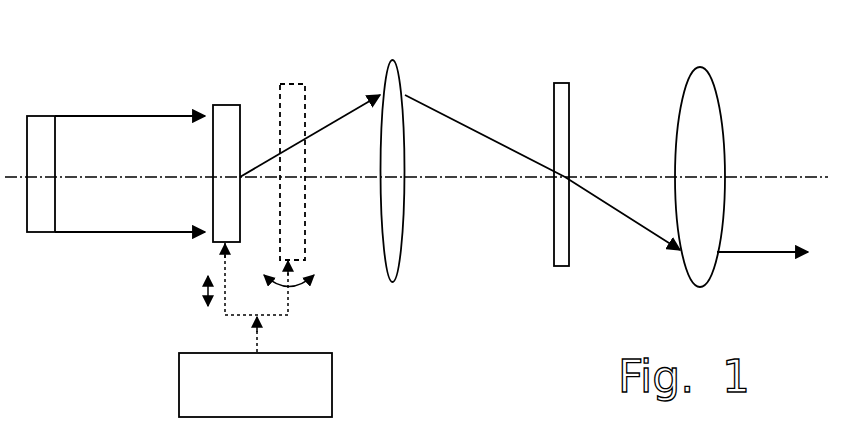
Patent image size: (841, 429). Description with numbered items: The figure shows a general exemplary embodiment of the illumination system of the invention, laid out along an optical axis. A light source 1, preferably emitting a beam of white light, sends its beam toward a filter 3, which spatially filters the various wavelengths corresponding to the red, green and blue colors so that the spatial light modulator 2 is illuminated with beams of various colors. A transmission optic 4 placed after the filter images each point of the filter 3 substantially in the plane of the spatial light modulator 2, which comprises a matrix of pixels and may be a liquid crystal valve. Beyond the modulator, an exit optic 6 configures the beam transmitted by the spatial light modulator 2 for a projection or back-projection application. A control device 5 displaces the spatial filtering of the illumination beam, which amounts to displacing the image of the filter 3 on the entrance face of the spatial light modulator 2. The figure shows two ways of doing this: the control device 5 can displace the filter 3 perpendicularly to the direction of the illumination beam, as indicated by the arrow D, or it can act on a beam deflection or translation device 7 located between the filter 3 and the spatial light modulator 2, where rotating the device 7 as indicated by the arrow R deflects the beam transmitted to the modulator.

The light source 1 is at (42, 116).
The spatial light modulator 2 is at (561, 83).
The filter 3 is at (222, 105).
The transmission optic 4 is at (392, 60).
The control device 5 is at (332, 387).
The exit optic 6 is at (700, 67).
The beam deflection or translation device 7 is at (292, 84).
The arrow D is at (205, 307).
The arrow R is at (300, 288).